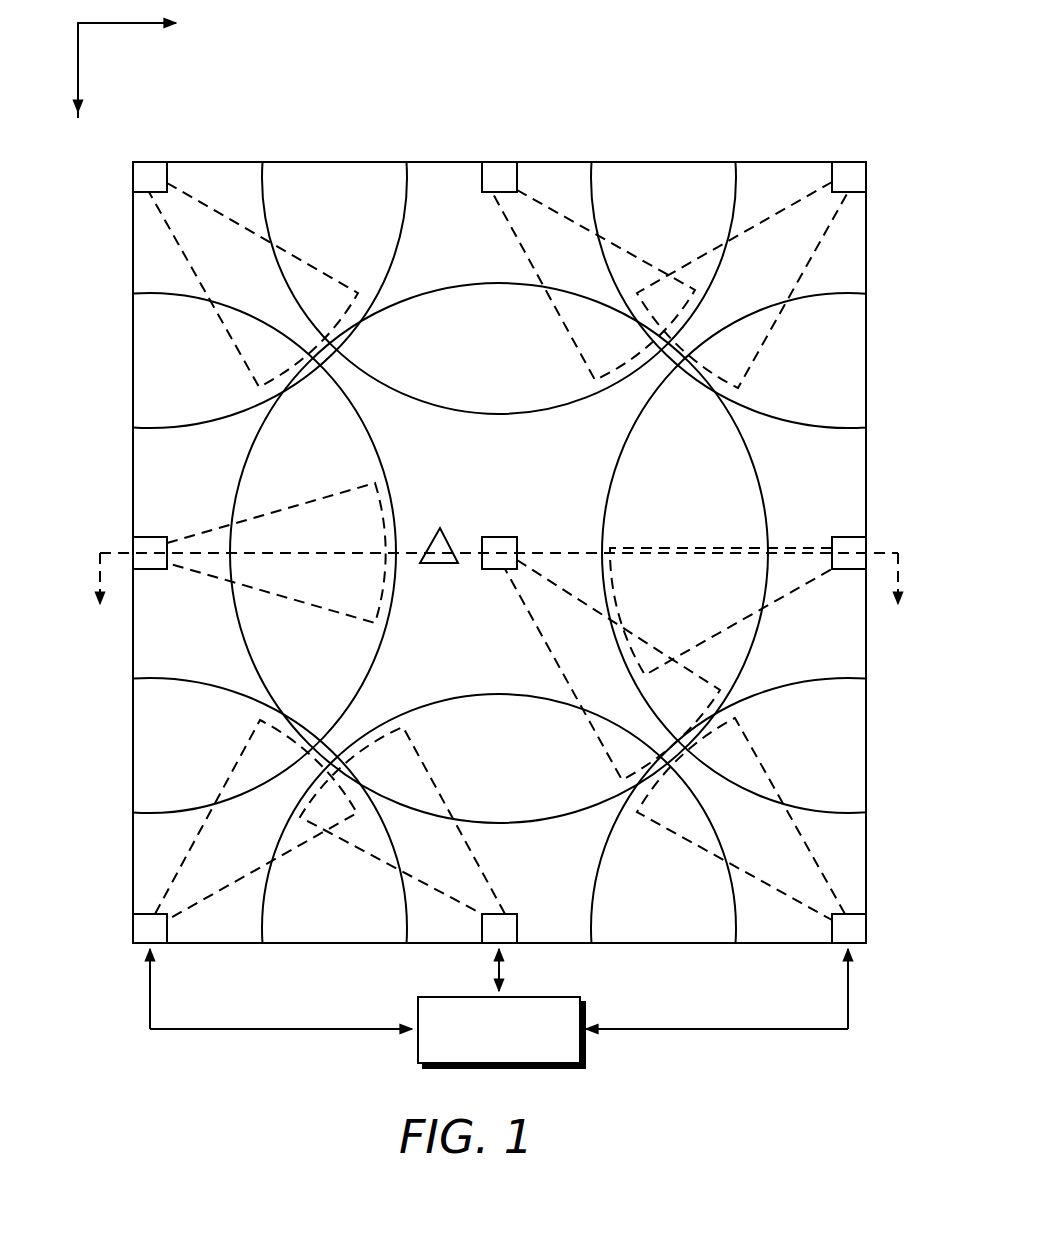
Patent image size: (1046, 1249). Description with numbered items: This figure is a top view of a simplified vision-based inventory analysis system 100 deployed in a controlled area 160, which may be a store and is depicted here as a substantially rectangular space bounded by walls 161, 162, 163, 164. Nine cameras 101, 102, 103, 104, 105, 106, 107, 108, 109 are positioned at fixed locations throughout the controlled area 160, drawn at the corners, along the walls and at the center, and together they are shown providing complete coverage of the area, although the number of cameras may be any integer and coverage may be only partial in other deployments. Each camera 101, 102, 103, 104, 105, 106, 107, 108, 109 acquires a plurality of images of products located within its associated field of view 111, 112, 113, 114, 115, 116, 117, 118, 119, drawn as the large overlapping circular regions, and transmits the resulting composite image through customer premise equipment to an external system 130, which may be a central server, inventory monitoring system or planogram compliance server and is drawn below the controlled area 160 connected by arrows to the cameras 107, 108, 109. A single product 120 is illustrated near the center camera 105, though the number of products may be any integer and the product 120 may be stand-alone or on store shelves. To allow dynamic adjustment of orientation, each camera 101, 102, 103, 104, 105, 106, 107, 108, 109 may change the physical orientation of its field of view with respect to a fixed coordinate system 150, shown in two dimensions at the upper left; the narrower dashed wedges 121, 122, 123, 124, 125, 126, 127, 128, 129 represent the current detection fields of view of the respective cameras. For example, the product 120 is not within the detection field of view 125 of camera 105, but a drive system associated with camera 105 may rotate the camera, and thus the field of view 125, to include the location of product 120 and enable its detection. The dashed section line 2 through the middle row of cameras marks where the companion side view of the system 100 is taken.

The vision-based inventory analysis system 100 is at (866, 141).
The camera 101 is at (133, 180).
The camera 102 is at (482, 180).
The camera 103 is at (866, 178).
The camera 104 is at (152, 537).
The camera 105 is at (511, 537).
The camera 106 is at (839, 537).
The camera 107 is at (167, 925).
The camera 108 is at (517, 927).
The camera 109 is at (832, 927).
The field of view 111 is at (206, 197).
The field of view 112 is at (428, 269).
The field of view 113 is at (751, 192).
The field of view 114 is at (148, 622).
The field of view 115 is at (428, 626).
The field of view 116 is at (788, 652).
The field of view 117 is at (138, 842).
The field of view 118 is at (518, 868).
The field of view 119 is at (813, 842).
The product 120 is at (447, 539).
The detection field of view 121 is at (215, 277).
The detection field of view 122 is at (548, 269).
The detection field of view 123 is at (738, 274).
The detection field of view 124 is at (310, 591).
The detection field of view 125 is at (575, 674).
The detection field of view 126 is at (658, 602).
The detection field of view 127 is at (221, 842).
The detection field of view 128 is at (403, 857).
The detection field of view 129 is at (735, 844).
The external system 130 is at (438, 997).
The fixed coordinate system 150 is at (114, 53).
The controlled area 160 is at (432, 162).
The wall 161 is at (553, 162).
The wall 162 is at (133, 345).
The wall 163 is at (866, 345).
The wall 164 is at (688, 943).
The section line 2- 2 is at (499, 598).